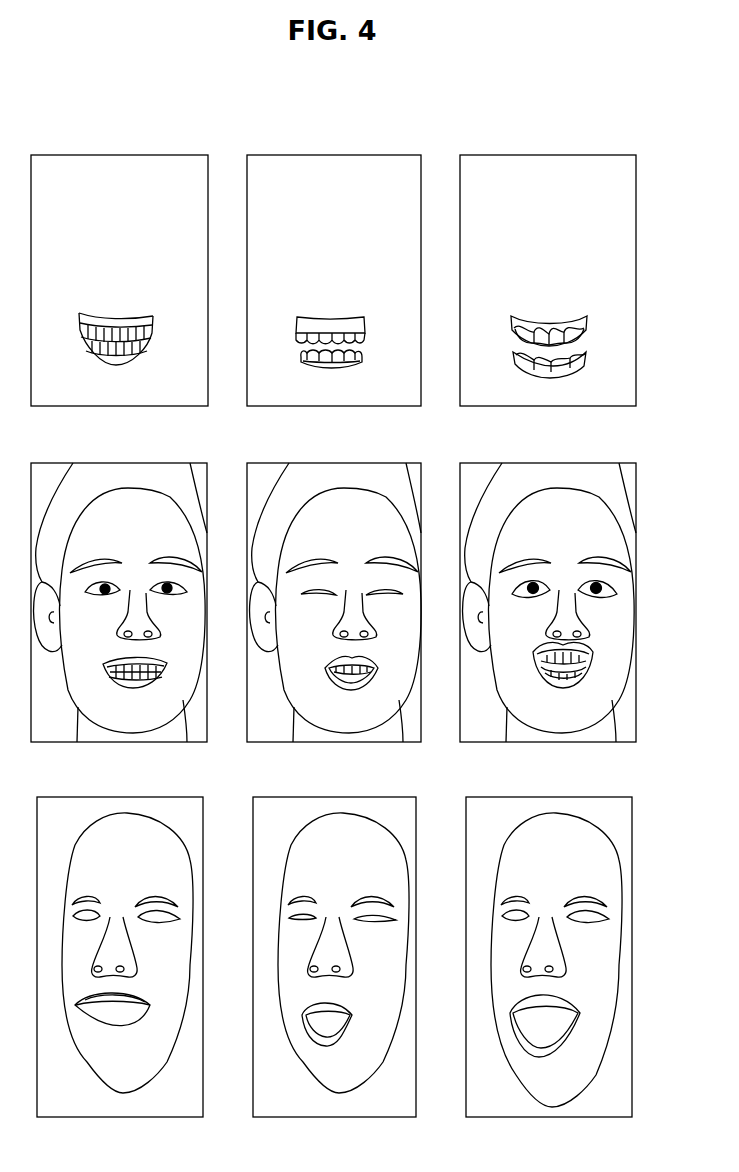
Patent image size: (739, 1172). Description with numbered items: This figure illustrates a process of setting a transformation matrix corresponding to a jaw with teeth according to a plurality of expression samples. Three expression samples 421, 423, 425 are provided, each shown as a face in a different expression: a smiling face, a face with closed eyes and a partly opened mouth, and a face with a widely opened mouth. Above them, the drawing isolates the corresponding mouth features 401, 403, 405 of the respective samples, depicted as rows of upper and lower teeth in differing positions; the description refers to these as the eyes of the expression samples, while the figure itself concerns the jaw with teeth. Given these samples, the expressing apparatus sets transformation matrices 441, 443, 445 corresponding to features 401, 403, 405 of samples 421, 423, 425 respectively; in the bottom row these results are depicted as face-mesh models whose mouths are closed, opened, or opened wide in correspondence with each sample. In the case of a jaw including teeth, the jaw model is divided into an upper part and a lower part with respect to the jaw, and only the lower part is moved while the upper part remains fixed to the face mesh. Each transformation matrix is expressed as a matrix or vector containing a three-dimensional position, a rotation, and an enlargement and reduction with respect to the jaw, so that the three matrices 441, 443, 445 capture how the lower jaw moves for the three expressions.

The jaw with teeth of first expression sample 401 is at (130, 155).
The jaw with teeth of second expression sample 403 is at (333, 155).
The jaw with teeth of third expression sample 405 is at (548, 155).
The first expression sample 421 is at (120, 463).
The second expression sample 423 is at (335, 463).
The third expression sample 425 is at (548, 463).
The first transformation matrix 441 is at (120, 797).
The second transformation matrix 443 is at (335, 797).
The third transformation matrix 445 is at (548, 797).